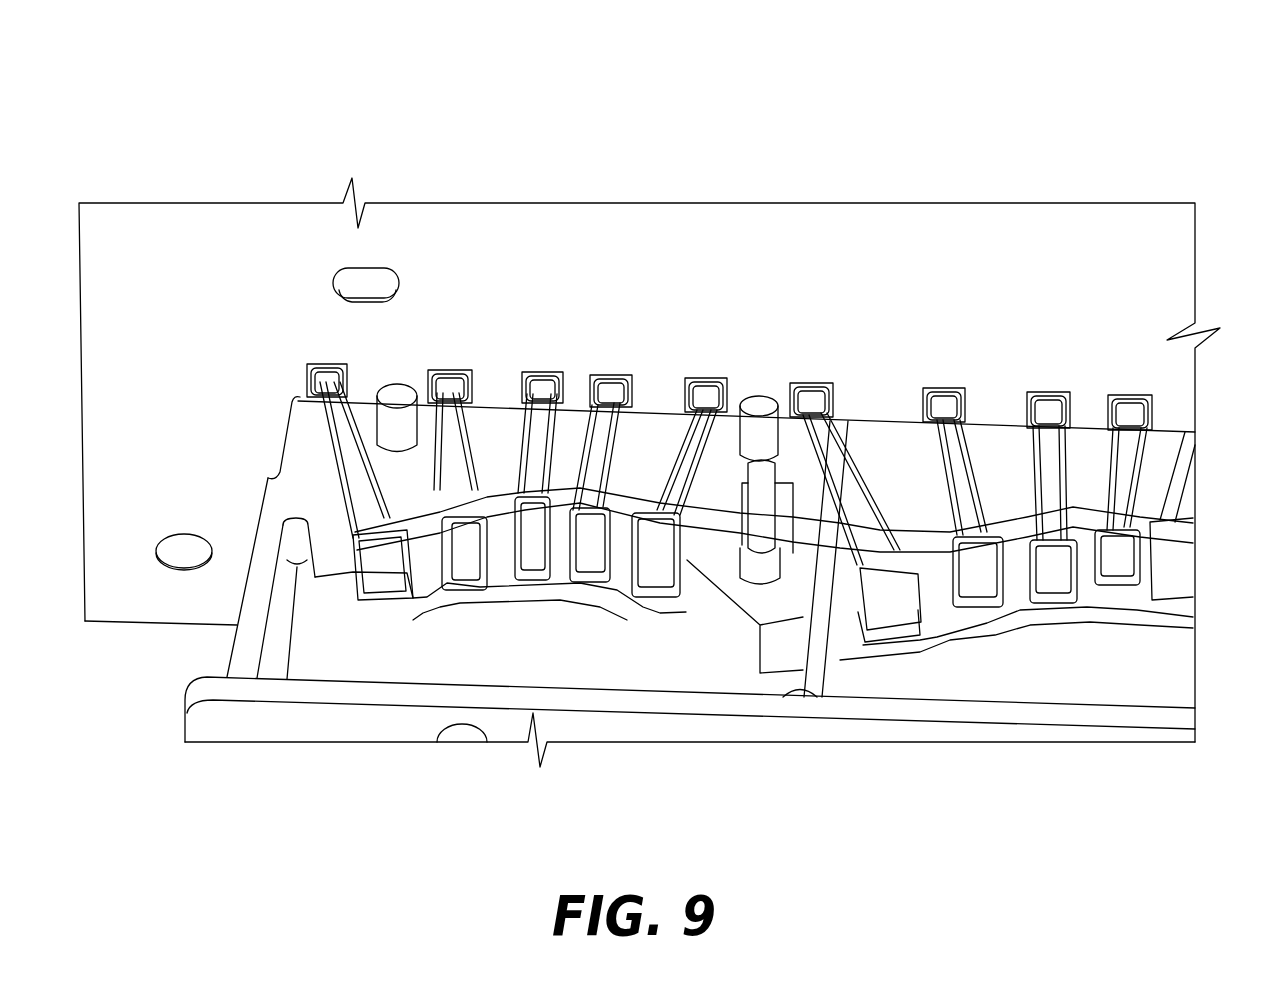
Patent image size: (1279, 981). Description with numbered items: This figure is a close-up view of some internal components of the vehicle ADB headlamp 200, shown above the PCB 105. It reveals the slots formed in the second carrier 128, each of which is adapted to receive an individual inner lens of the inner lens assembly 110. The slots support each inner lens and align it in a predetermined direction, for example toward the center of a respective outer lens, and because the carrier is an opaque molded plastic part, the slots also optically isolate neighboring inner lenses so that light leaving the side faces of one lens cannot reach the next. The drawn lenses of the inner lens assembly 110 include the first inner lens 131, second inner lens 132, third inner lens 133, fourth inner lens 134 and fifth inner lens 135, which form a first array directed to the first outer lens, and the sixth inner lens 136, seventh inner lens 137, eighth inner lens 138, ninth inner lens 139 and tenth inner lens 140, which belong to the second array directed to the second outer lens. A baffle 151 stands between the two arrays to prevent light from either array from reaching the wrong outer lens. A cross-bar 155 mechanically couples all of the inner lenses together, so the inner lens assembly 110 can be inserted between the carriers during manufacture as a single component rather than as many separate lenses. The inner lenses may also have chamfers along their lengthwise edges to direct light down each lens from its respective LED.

The vehicle ADB headlamp 200 is at (205, 76).
The PCB 105 is at (692, 243).
The inner lens assembly 110 is at (242, 390).
The second carrier 128 is at (246, 651).
The first inner lens 131 is at (362, 553).
The second inner lens 132 is at (478, 396).
The third inner lens 133 is at (541, 422).
The fourth inner lens 134 is at (607, 417).
The fifth inner lens 135 is at (693, 425).
The sixth inner lens 136 is at (857, 503).
The seventh inner lens 137 is at (960, 487).
The eighth inner lens 138 is at (1046, 465).
The ninth inner lens 139 is at (1126, 450).
The tenth inner lens 140 is at (1192, 505).
The baffle 151 is at (835, 684).
The cross-bar 155 is at (714, 530).